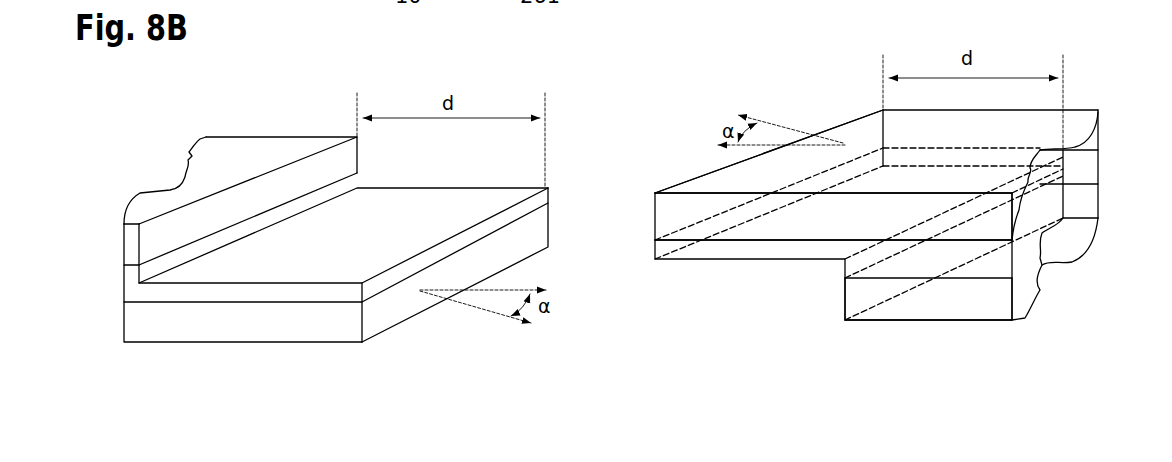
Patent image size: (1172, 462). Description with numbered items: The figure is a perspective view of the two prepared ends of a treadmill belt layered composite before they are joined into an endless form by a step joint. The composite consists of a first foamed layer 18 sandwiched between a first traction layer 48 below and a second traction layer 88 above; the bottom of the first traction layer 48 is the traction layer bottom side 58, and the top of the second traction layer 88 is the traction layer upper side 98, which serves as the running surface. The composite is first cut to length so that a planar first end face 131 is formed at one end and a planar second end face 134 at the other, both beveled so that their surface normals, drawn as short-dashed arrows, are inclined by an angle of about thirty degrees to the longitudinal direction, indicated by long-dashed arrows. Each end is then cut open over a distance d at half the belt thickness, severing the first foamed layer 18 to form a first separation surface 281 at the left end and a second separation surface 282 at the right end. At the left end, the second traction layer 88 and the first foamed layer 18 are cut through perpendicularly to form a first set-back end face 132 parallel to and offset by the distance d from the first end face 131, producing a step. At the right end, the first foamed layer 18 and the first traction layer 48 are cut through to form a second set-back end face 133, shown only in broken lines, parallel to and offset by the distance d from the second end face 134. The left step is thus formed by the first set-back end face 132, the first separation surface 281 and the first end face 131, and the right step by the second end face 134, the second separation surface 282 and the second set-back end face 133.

The first foamed layer 18 is at (233, 290).
The first traction layer 48 is at (153, 318).
The traction layer bottom side 58 is at (955, 305).
The second traction layer 88 is at (133, 248).
The traction layer upper side 98 is at (245, 148).
The first end face 131 is at (508, 252).
The first set-back end face 132 is at (305, 185).
The second set-back end face 133 is at (915, 262).
The second end face 134 is at (728, 181).
The first separation surface 281 is at (427, 218).
The second separation surface 282 is at (783, 232).